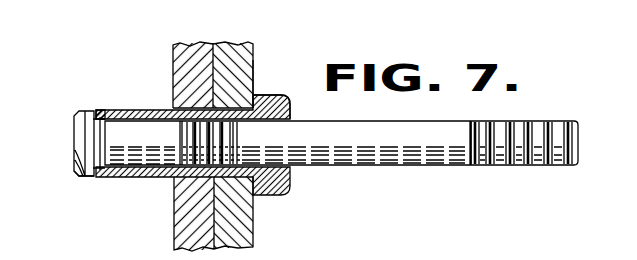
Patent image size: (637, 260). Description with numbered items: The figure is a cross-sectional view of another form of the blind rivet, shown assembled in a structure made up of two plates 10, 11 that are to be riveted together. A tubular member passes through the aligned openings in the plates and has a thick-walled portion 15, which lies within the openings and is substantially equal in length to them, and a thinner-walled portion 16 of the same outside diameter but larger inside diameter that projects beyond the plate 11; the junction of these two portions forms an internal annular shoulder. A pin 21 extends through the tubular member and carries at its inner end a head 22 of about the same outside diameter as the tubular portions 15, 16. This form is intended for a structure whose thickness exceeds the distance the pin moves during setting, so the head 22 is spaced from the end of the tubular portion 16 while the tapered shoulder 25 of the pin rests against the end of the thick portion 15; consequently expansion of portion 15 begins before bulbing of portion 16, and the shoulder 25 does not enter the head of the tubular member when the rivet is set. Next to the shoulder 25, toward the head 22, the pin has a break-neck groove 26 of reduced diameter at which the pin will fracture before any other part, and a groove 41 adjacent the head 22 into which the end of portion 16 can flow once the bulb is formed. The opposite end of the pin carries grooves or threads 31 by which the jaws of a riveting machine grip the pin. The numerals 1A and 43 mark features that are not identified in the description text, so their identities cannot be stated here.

The plate 10 is at (249, 43).
The plate 11 is at (193, 23).
The portion of tubular member 15 is at (240, 108).
The portion of tubular member 16 is at (128, 110).
The boss 1A is at (291, 110).
The washer 43 is at (97, 110).
The groove 41 is at (99, 143).
The head 22 is at (77, 180).
The tapered shoulder 25 is at (170, 178).
The pin 21 is at (426, 167).
The break-neck groove 26 is at (241, 133).
The grooves or threads 31 is at (533, 122).